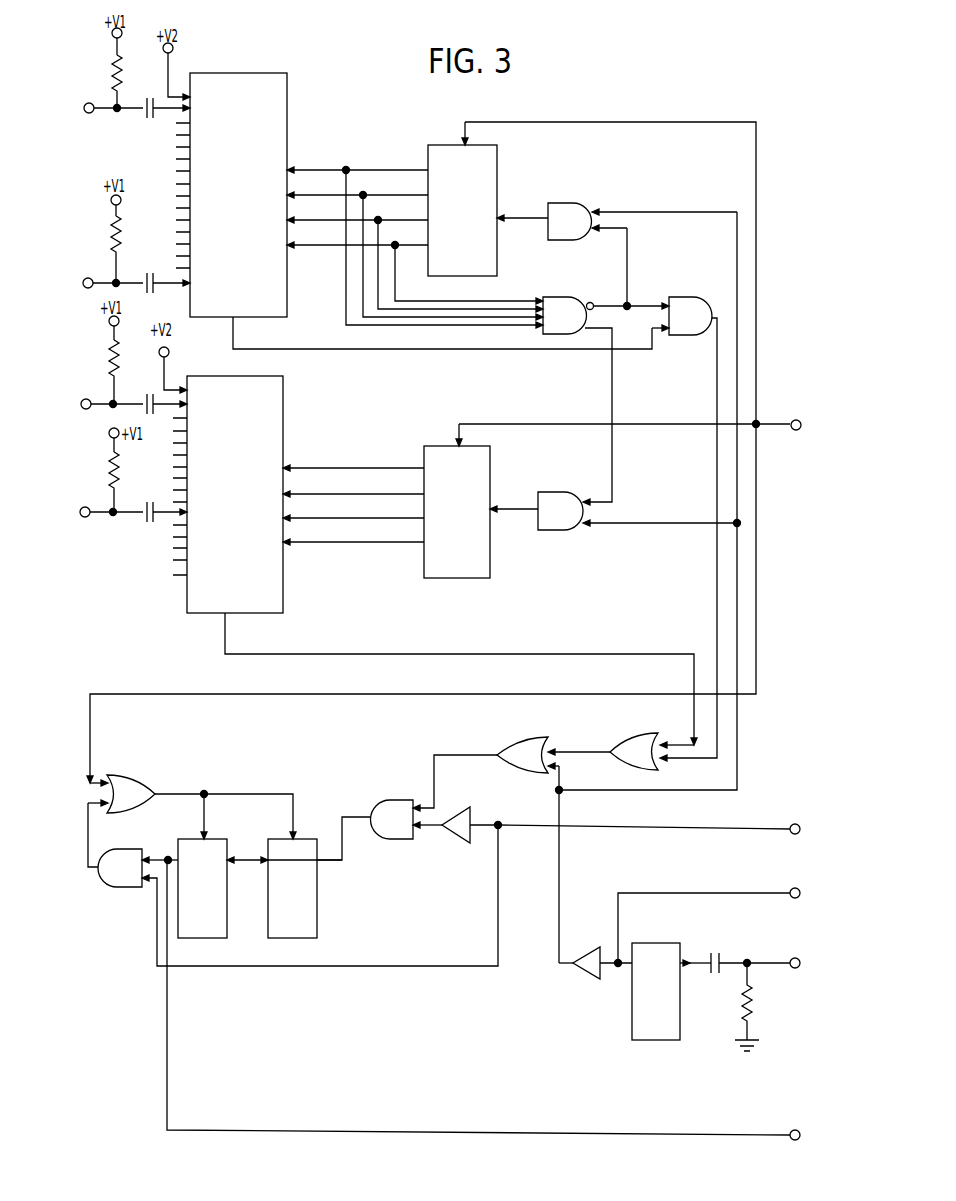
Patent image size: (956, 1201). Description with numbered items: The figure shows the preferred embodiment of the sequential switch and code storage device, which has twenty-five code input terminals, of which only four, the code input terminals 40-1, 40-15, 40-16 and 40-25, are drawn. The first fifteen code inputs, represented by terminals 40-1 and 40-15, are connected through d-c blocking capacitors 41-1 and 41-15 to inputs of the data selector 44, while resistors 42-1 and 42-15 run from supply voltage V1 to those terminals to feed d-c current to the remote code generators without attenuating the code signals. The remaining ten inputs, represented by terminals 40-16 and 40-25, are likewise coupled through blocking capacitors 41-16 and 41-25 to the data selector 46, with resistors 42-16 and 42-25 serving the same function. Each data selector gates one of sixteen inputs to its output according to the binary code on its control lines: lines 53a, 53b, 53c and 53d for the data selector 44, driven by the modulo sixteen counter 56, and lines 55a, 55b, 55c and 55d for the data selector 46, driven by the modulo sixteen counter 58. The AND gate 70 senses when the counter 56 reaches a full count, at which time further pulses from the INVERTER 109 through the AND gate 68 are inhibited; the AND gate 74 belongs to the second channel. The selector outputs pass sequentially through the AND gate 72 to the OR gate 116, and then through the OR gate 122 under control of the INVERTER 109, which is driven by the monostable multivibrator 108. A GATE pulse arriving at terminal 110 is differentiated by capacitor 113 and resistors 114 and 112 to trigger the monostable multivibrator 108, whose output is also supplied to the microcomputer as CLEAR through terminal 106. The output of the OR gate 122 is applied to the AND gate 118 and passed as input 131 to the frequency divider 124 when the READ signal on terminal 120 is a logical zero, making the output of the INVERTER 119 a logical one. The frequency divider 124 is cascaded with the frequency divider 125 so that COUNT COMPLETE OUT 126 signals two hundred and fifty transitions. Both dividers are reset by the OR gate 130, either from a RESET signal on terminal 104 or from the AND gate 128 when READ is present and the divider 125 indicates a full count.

The code input terminal 40-1 is at (85, 112).
The d-c blocking capacitor 41-1 is at (148, 113).
The resistor 42-1 is at (134, 81).
The code input terminal 40-15 is at (84, 281).
The d-c blocking capacitor 41-15 is at (161, 262).
The resistor 42-15 is at (122, 234).
The code input terminal 40-16 is at (82, 404).
The d-c blocking capacitor 41-16 is at (148, 397).
The resistor 42-16 is at (109, 350).
The code input terminal 40-25 is at (82, 517).
The d-c blocking capacitor 41-25 is at (160, 491).
The resistor 42-25 is at (108, 472).
The data selector 44 is at (288, 107).
The data selector 46 is at (285, 446).
The control input line 53a is at (358, 172).
The control input line 53b is at (377, 197).
The control input line 53c is at (377, 222).
The control input line 53d is at (387, 247).
The control input line 55a is at (354, 473).
The control input line 55b is at (354, 499).
The control input line 55c is at (354, 523).
The control input line 55d is at (354, 547).
The modulo 16 counter 56 is at (500, 153).
The modulo 16 counter 58 is at (497, 461).
The AND gate 68 is at (583, 240).
The AND gate 70 is at (578, 295).
The AND gate 72 is at (700, 297).
The AND gate 74 is at (546, 492).
The RESET terminal 104 is at (797, 431).
The CLEAR terminal 106 is at (801, 897).
The monostable multivibrator 108 is at (632, 1005).
The INVERTER 109 is at (592, 977).
The GATE terminal 110 is at (790, 969).
The resistor 112 is at (740, 1006).
The capacitor 113 is at (709, 957).
The resistor 114 is at (718, 975).
The OR gate 116 is at (638, 733).
The AND gate 118 is at (390, 797).
The INVERTER 119 is at (463, 841).
The READ terminal 120 is at (792, 831).
The OR gate 122 is at (518, 737).
The frequency divider 124 is at (320, 930).
The frequency divider 125 is at (228, 905).
The COUNT COMPLETE OUT 126 is at (790, 1140).
The AND gate 128 is at (127, 850).
The OR gate 130 is at (130, 776).
The input 131 is at (335, 866).